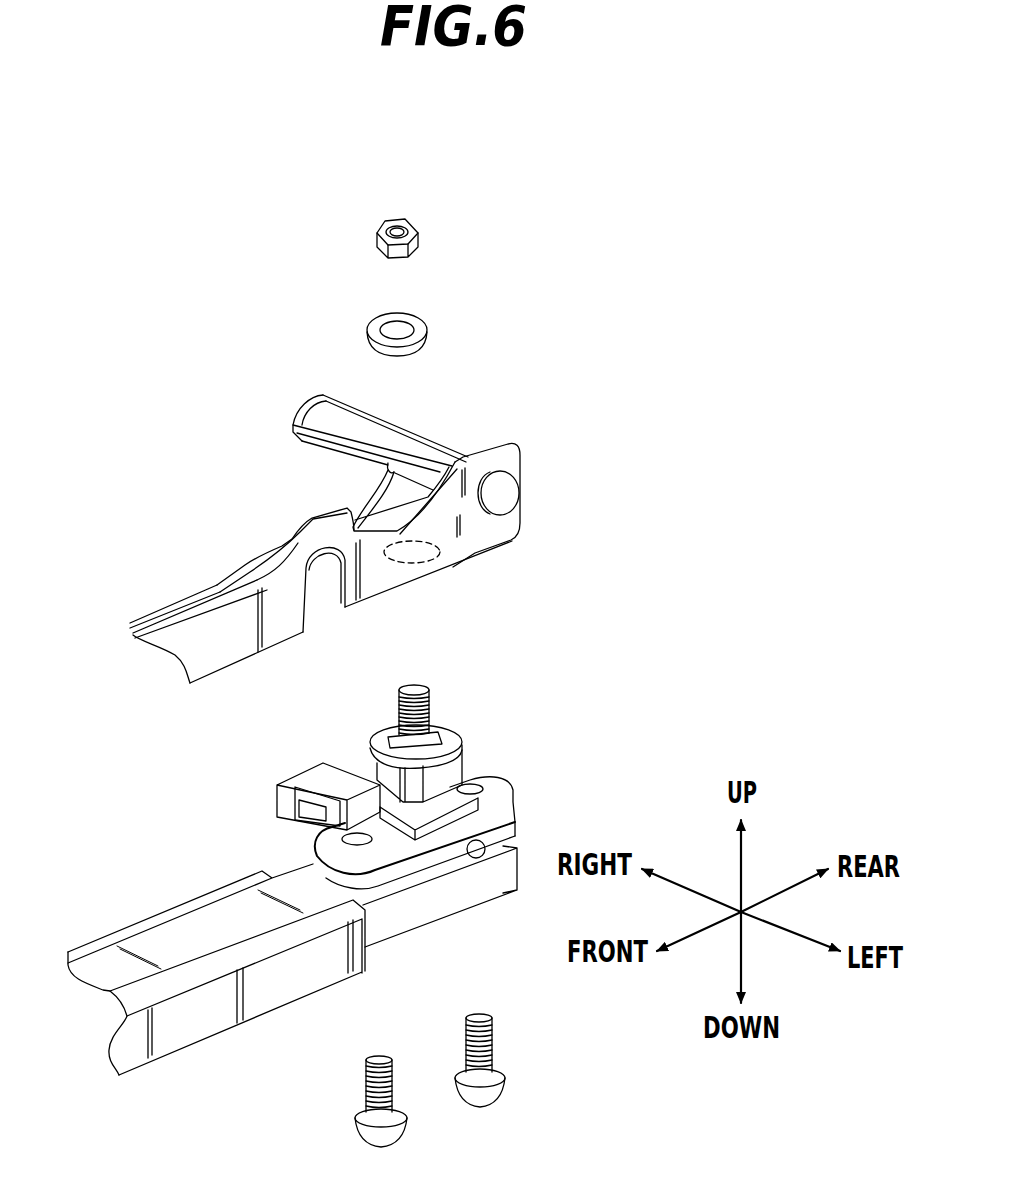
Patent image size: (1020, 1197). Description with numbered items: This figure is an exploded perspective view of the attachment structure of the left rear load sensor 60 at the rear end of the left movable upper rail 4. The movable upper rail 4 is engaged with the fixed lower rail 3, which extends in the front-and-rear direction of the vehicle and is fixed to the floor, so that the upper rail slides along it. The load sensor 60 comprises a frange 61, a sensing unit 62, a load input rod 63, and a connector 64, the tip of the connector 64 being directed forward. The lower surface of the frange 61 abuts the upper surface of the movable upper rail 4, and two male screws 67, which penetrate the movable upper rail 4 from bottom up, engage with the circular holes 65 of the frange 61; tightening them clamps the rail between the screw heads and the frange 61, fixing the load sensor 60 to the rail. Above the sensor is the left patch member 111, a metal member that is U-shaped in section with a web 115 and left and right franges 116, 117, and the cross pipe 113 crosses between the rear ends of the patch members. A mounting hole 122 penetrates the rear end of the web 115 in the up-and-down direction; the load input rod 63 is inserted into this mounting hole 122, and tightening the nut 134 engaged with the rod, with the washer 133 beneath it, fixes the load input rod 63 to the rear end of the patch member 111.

The fixed lower rail 3 is at (182, 1020).
The movable upper rail 4 is at (440, 860).
The left rear load sensor 60 is at (413, 745).
The frange 61 is at (515, 806).
The sensing unit 62 is at (450, 767).
The load input rod 63 is at (418, 687).
The connector 64 is at (305, 765).
The circular holes 65 is at (470, 784).
The male screws 67 is at (366, 1092).
The patch member 111 is at (350, 523).
The cross pipe 113 is at (388, 419).
The web 115 is at (318, 590).
The frange 116 is at (477, 541).
The frange 117 is at (162, 620).
The mounting hole 122 is at (397, 535).
The washer 133 is at (418, 327).
The nut 134 is at (409, 222).